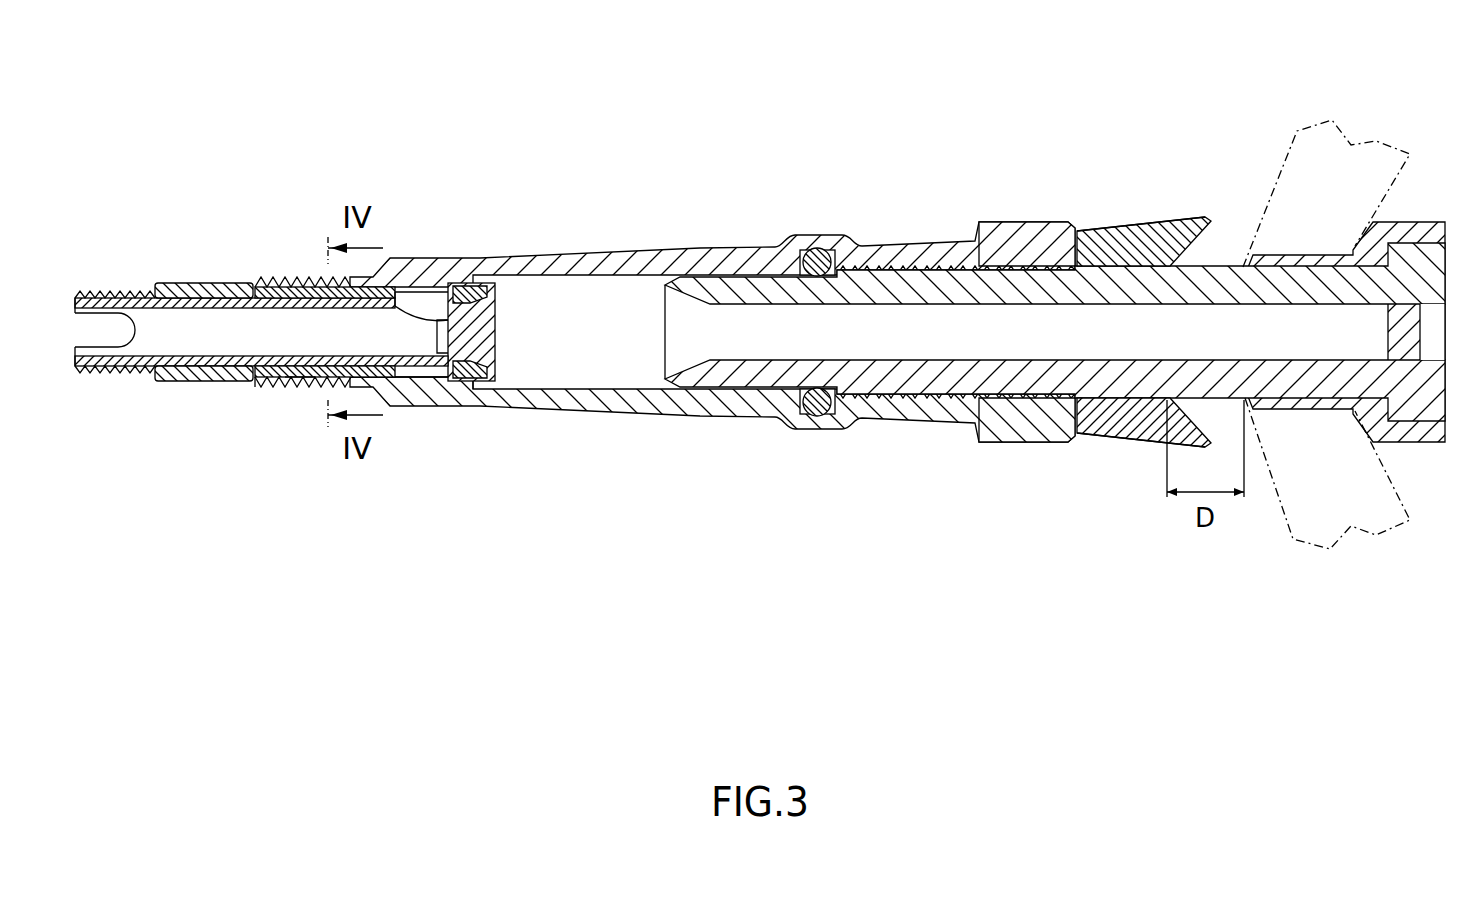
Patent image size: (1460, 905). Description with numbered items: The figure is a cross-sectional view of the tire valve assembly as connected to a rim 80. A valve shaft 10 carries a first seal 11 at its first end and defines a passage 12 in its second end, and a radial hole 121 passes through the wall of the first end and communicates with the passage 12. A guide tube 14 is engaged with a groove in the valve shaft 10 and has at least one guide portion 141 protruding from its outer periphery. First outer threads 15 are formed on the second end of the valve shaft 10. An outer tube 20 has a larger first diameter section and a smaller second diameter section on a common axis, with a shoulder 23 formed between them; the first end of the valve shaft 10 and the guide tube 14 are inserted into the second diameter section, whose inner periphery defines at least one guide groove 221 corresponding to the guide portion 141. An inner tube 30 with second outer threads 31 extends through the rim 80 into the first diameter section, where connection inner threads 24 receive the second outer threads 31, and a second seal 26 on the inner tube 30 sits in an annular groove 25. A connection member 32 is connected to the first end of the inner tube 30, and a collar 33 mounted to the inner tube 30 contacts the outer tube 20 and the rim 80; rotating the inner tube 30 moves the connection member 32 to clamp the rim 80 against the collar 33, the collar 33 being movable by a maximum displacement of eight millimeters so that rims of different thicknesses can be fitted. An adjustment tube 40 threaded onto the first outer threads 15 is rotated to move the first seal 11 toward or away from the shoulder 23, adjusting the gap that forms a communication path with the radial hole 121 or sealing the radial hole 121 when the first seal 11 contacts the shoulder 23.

The valve shaft 10 is at (502, 296).
The first seal 11 is at (470, 287).
The passage 12 is at (145, 338).
The radial hole 121 is at (422, 305).
The guide tube 14 is at (290, 286).
The guide portion 141 is at (300, 379).
The first outer threads 15 is at (118, 291).
The outer tube 20 is at (700, 243).
The guide groove 221 is at (405, 374).
The shoulder 23 is at (472, 384).
The connection inner threads 24 is at (1010, 278).
The annular groove 25 is at (843, 396).
The second seal 26 is at (790, 416).
The inner tube 30 is at (1228, 262).
The second outer threads 31 is at (1123, 260).
The connection member 32 is at (1420, 222).
The collar 33 is at (1173, 229).
The adjustment tube 40 is at (211, 278).
The rim 80 is at (1290, 152).